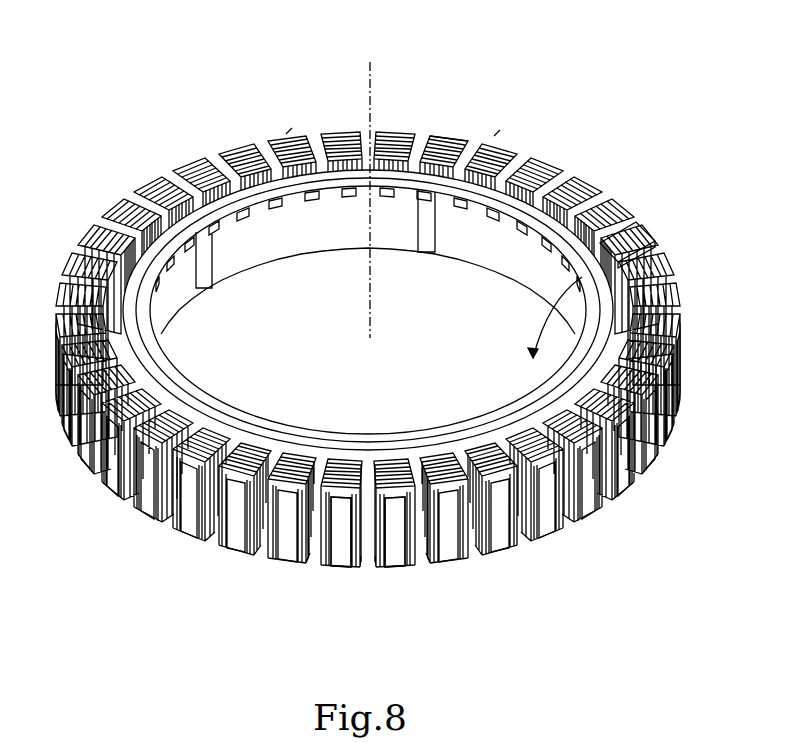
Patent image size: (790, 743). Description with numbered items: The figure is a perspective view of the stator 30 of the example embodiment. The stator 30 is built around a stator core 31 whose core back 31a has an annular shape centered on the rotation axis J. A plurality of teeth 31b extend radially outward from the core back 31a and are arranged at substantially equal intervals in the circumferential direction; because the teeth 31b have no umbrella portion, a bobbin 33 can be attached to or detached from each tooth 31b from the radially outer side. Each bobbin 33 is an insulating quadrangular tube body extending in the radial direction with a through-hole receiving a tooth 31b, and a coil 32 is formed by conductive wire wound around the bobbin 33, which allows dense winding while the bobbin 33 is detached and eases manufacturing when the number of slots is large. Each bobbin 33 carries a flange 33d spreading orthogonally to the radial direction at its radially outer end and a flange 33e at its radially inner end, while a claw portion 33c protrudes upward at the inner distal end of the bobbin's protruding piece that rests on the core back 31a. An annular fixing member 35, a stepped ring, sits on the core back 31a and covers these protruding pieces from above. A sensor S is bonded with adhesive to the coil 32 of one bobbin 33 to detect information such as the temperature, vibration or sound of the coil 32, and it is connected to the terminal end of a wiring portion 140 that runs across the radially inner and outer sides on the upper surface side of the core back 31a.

The stator 30 is at (373, 346).
The stator core 31 is at (247, 245).
The core back 31a is at (398, 232).
The teeth 31b is at (345, 542).
The coil 32 is at (289, 133).
The bobbin 33 is at (331, 122).
The claw portion 33c is at (490, 217).
The flange 33d is at (440, 129).
The flange 33e is at (343, 247).
The fixing member 35 is at (378, 440).
The wiring portion 140 is at (547, 330).
The sensor S is at (637, 232).
The rotation axis J is at (375, 186).